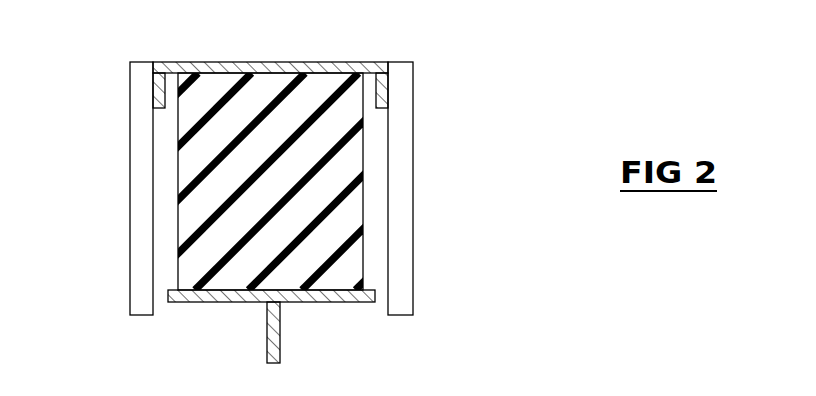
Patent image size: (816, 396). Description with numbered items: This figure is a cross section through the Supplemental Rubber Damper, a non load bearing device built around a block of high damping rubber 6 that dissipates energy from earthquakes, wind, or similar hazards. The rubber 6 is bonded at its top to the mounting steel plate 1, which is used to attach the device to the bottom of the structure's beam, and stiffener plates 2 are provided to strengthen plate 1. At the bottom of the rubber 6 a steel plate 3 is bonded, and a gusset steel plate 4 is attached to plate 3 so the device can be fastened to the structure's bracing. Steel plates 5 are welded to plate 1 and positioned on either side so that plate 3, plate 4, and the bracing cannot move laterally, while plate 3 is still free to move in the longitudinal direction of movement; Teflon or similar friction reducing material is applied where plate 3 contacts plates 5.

The mounting steel plate 1 is at (270, 43).
The stiffener plates 2 is at (269, 120).
The steel plate 3 is at (253, 325).
The gusset steel plate 4 is at (230, 343).
The steel plates 5 is at (306, 188).
The high damping rubber 6 is at (286, 181).